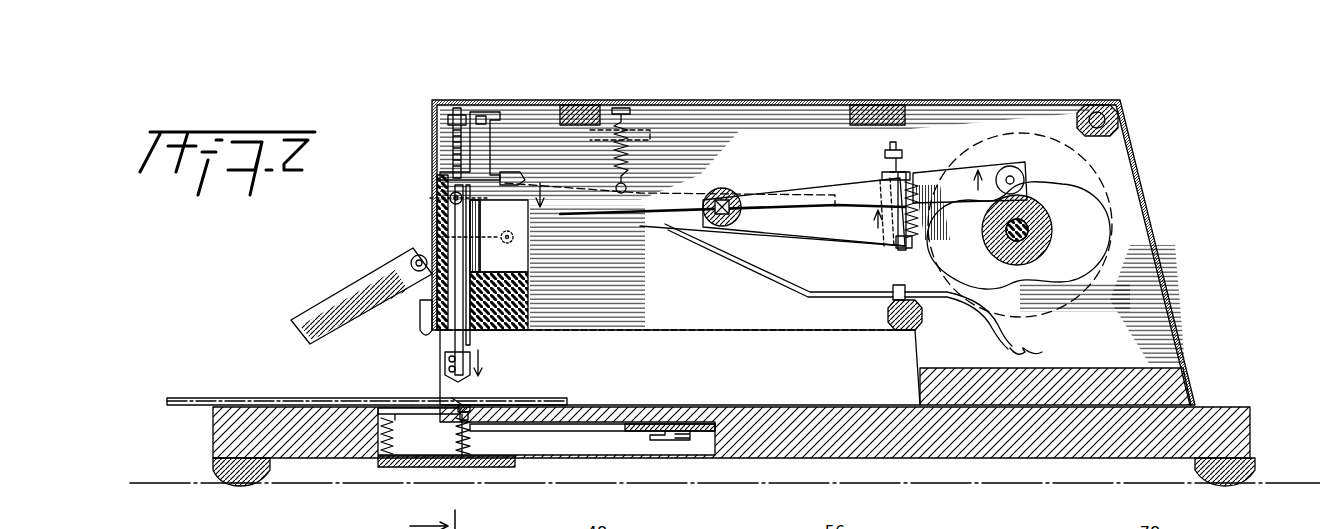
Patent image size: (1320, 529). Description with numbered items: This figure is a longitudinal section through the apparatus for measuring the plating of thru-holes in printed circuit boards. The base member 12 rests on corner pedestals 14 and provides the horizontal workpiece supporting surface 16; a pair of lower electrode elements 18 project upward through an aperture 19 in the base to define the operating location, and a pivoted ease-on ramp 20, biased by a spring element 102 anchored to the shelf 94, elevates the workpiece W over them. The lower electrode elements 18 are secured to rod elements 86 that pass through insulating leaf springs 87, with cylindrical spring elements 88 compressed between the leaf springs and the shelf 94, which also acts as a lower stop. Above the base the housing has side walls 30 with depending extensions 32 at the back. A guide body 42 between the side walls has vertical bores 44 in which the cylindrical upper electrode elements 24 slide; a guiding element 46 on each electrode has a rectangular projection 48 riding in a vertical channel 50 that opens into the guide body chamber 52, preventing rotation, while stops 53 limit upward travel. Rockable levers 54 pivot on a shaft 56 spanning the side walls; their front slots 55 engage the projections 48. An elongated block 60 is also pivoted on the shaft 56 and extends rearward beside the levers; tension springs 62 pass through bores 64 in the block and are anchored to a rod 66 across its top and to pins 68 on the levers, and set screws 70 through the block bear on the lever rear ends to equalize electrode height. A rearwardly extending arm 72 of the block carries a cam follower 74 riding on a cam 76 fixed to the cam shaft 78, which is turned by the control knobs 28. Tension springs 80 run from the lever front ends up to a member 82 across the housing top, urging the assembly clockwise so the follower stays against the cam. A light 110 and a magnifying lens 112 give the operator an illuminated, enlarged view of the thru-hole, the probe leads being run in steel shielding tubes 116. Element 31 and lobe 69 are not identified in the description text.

The base member 12 is at (220, 432).
The corner pedestals 14 is at (237, 474).
The workpiece supporting surface 16 is at (242, 398).
The lower electrode elements 18 is at (465, 402).
The aperture 19 is at (468, 410).
The ease-on ramp 20 is at (425, 404).
The upper electrode elements 24 is at (440, 370).
The control knobs 28 is at (1115, 140).
The side walls 30 is at (760, 320).
The workpiece support 31 is at (452, 398).
The depending extensions 32 is at (1150, 213).
The guide body 42 is at (545, 318).
The bores 44 is at (437, 304).
The guiding element 46 is at (437, 192).
The rectangularly shaped projections 48 is at (488, 178).
The vertical channels 50 is at (440, 240).
The guide body chamber 52 is at (500, 216).
The stops 53 is at (450, 168).
The levers 54 is at (663, 200).
The slots 55 is at (504, 182).
The shaft 56 is at (730, 194).
The elongated block 60 is at (860, 190).
The tension springs 62 is at (895, 236).
The bores 64 is at (922, 176).
The rod 66 is at (905, 188).
The projecting pins 68 is at (912, 238).
The cam lobe 69 is at (1070, 192).
The set screws 70 is at (890, 160).
The rearwardly extending arm 72 is at (985, 155).
The cam follower 74 is at (1018, 168).
The cam 76 is at (1040, 228).
The cam shaft 78 is at (1022, 262).
The tension springs 80 is at (630, 136).
The member 82 is at (530, 176).
The rod elements 86 is at (470, 432).
The insulating leaf springs 87 is at (578, 426).
The cylindrical spring elements 88 is at (440, 468).
The shelf 94 is at (510, 468).
The spring element 102 is at (378, 462).
The light 110 is at (425, 320).
The magnifying lens 112 is at (326, 306).
The steel shielding tubes 116 is at (745, 266).